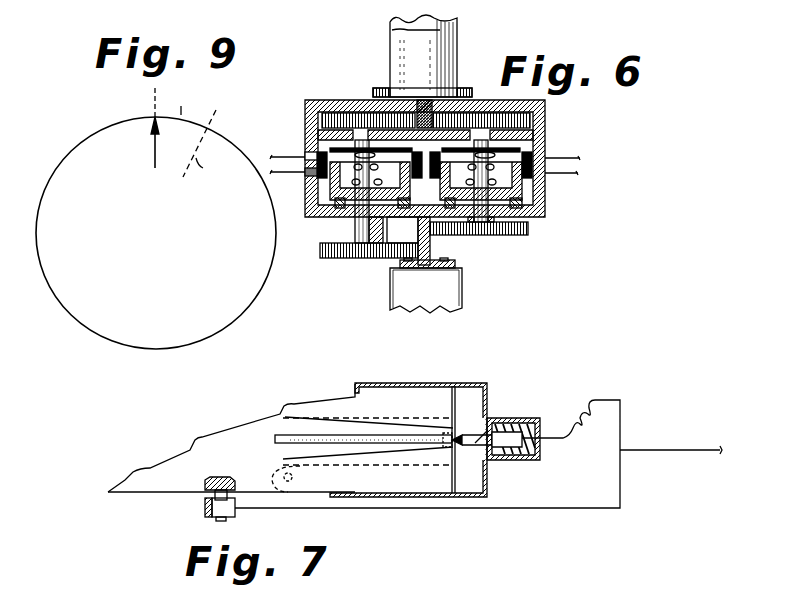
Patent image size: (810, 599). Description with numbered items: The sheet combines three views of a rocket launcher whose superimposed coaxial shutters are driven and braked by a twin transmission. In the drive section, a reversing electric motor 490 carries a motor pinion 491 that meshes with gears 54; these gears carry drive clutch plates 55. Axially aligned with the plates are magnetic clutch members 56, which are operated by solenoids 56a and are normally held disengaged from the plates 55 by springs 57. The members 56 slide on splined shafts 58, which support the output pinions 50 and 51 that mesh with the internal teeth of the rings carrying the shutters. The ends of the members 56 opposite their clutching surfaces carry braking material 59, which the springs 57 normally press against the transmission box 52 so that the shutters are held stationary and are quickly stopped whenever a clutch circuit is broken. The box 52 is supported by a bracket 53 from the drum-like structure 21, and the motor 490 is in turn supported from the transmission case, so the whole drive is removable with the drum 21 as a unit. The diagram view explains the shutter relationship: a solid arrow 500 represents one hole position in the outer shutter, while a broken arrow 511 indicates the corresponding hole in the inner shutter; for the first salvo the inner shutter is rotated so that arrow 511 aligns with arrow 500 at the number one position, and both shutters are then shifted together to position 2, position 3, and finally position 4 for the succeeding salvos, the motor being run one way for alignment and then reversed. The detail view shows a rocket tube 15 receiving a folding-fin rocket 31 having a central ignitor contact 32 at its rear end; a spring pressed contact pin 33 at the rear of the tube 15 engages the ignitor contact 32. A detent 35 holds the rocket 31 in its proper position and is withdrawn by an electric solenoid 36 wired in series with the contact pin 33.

In FIG. 9, the position 2 is at (180, 102).
In FIG. 9, the position 3 is at (211, 124).
In FIG. 9, the position 4 is at (233, 139).
In FIG. 9, the solid arrow 500 is at (152, 155).
In FIG. 9, the broken arrow 511 is at (203, 168).
In FIG. 6, the reversing electric motor 490 is at (450, 40).
In FIG. 6, the motor pinion 491 is at (425, 100).
In FIG. 6, the box 52 is at (545, 125).
In FIG. 6, the gears 54 is at (355, 112).
In FIG. 6, the drive clutch plates 55 is at (527, 150).
In FIG. 6, the magnetic clutch members 56 is at (533, 185).
In FIG. 6, the solenoids 56a is at (580, 162).
In FIG. 6, the springs 57 is at (536, 196).
In FIG. 6, the splined shafts 58 is at (355, 222).
In FIG. 6, the braking material 59 is at (330, 195).
In FIG. 6, the pinion 50 is at (365, 258).
In FIG. 6, the pinion 51 is at (510, 235).
In FIG. 6, the bracket 53 is at (432, 244).
In FIG. 6, the drum-like structure 21 is at (462, 296).
In FIG. 7, the rocket tube 15 is at (426, 366).
In FIG. 7, the rocket 31 is at (246, 456).
In FIG. 7, the ignitor contact 32 is at (456, 446).
In FIG. 7, the spring pressed contact pin 33 is at (492, 428).
In FIG. 7, the detent 35 is at (208, 496).
In FIG. 7, the electric solenoid 36 is at (228, 512).